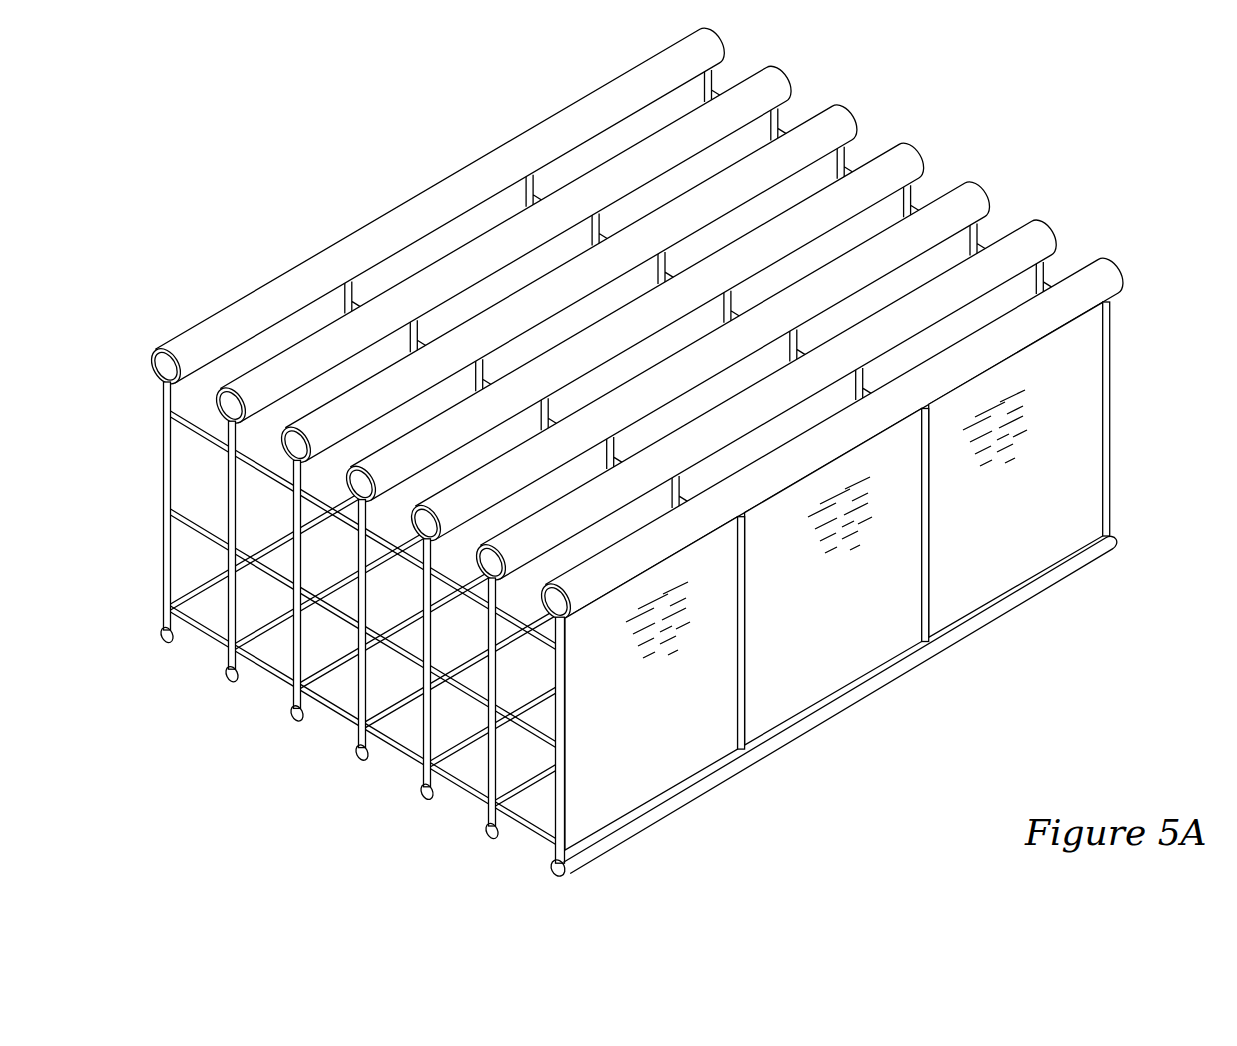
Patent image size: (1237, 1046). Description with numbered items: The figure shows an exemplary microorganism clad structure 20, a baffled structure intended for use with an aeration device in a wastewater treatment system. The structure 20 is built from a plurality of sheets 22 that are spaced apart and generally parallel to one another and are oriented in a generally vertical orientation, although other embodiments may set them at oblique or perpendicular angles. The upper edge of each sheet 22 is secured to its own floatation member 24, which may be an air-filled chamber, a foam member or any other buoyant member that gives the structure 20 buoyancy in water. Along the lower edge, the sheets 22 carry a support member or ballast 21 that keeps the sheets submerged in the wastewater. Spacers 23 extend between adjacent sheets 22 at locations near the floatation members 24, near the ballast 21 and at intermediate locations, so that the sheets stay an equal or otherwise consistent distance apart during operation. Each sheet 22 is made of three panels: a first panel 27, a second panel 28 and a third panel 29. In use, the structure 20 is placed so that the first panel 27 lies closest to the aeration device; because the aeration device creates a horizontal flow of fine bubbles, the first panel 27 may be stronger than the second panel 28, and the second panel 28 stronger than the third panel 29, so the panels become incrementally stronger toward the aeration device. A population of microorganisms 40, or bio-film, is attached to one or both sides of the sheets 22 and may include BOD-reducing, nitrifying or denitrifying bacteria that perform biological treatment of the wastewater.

The microorganism clad structure 20 is at (640, 451).
The ballast 21 is at (550, 867).
The sheet 22 is at (253, 630).
The spacer 23 is at (192, 437).
The floatation member 24 is at (415, 336).
The first panel 27 is at (1054, 469).
The second panel 28 is at (846, 668).
The third panel 29 is at (660, 772).
The population of microorganisms 40 is at (1025, 432).